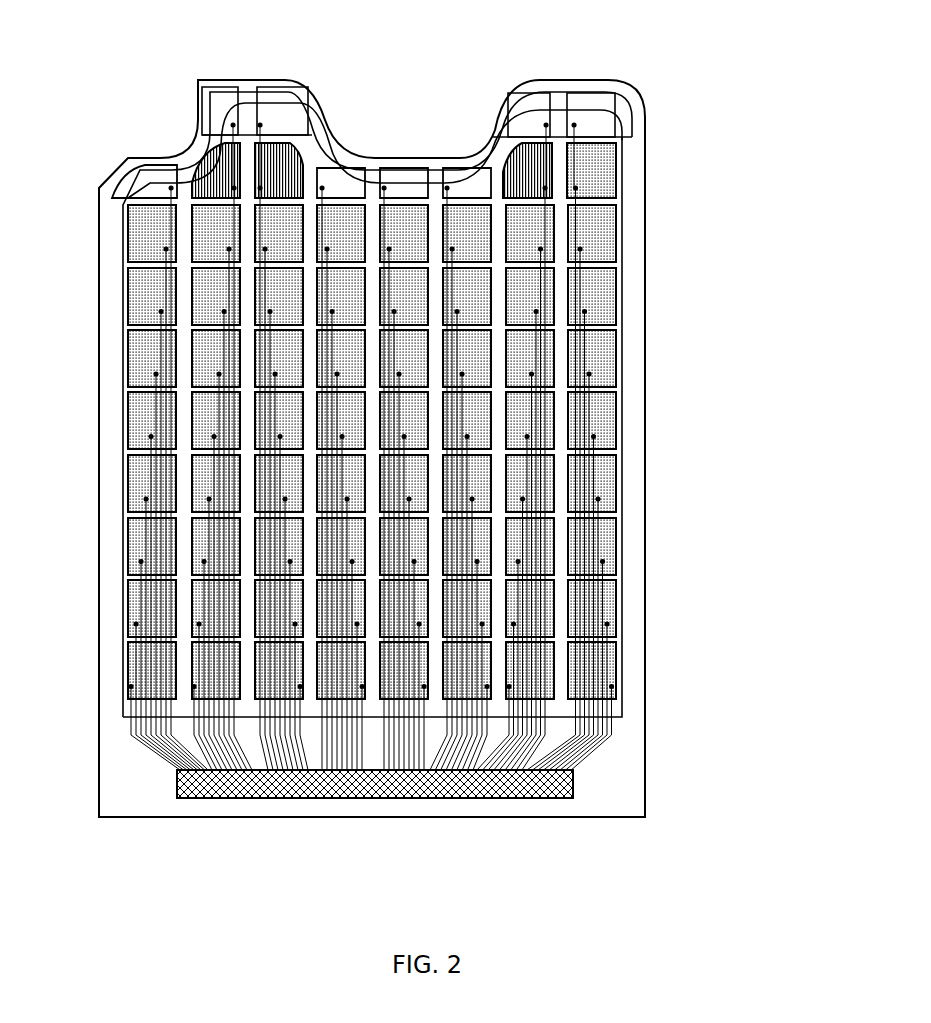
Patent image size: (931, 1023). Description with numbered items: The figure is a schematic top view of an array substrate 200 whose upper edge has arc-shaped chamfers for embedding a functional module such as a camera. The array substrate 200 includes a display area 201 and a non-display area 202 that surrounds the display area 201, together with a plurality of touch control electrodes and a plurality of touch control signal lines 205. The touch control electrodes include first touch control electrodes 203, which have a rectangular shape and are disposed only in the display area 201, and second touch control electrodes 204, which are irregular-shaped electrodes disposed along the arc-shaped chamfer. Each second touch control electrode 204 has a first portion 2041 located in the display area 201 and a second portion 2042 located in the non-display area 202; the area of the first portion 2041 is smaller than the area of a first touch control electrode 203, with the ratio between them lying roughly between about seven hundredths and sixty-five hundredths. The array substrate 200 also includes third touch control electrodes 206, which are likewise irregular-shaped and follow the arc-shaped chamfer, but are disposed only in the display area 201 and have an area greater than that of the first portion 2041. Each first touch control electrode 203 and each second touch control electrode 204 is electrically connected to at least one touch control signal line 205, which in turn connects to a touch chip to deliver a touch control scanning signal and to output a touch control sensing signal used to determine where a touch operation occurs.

The array substrate 200 is at (622, 41).
The display area 201 is at (600, 512).
The non-display area 202 is at (627, 297).
The first touch control electrode 203 is at (600, 226).
The second touch control electrode 204 is at (463, 142).
The first portion 2041 is at (603, 128).
The second portion 2042 is at (605, 103).
The touch control signal line 205 is at (587, 352).
The third touch control electrode 206 is at (288, 170).